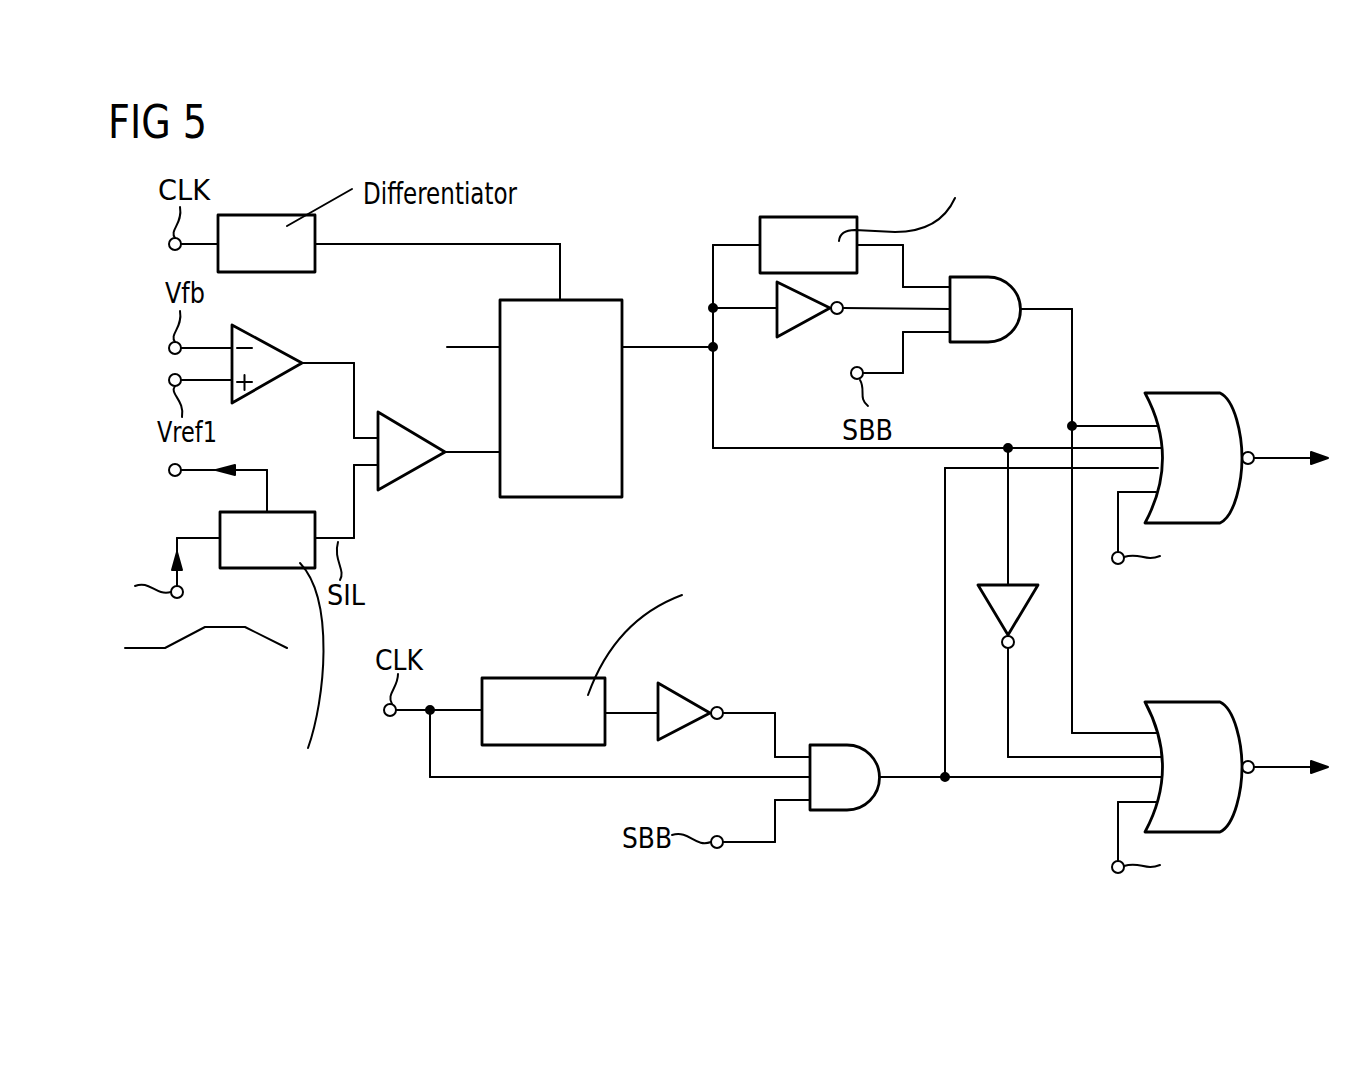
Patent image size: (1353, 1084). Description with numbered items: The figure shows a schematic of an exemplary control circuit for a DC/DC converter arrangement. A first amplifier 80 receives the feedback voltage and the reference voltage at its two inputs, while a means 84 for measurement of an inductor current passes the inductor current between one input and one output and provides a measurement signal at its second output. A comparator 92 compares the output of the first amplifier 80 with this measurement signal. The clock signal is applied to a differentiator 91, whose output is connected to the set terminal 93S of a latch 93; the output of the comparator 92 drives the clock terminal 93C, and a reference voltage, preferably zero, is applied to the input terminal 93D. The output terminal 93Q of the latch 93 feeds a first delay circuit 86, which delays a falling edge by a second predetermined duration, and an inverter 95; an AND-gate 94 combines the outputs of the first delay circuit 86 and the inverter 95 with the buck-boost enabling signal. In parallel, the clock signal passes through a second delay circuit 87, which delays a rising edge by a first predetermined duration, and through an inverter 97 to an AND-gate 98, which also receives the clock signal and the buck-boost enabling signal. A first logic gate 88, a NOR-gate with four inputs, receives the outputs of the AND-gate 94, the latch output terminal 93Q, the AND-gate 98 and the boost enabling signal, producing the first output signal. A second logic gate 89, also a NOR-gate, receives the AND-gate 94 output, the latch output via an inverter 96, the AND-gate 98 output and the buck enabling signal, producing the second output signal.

The first amplifier 80 is at (274, 347).
The means for measurement of an inductor current 84 is at (268, 569).
The first delay circuit 86 is at (805, 217).
The second delay circuit 87 is at (545, 678).
The first logic gate 88 is at (1190, 393).
The second logic gate 89 is at (1190, 702).
The differentiator 91 is at (265, 215).
The comparator 92 is at (412, 428).
The latch 93 is at (562, 498).
The clock terminal 93C is at (497, 455).
The input terminal 93D is at (497, 344).
The output terminal 93Q is at (625, 343).
The set terminal 93S is at (562, 298).
The AND-gate 94 is at (965, 277).
The inverter 95 is at (806, 328).
The inverter 96 is at (990, 613).
The inverter 97 is at (688, 695).
The AND-gate 98 is at (825, 745).